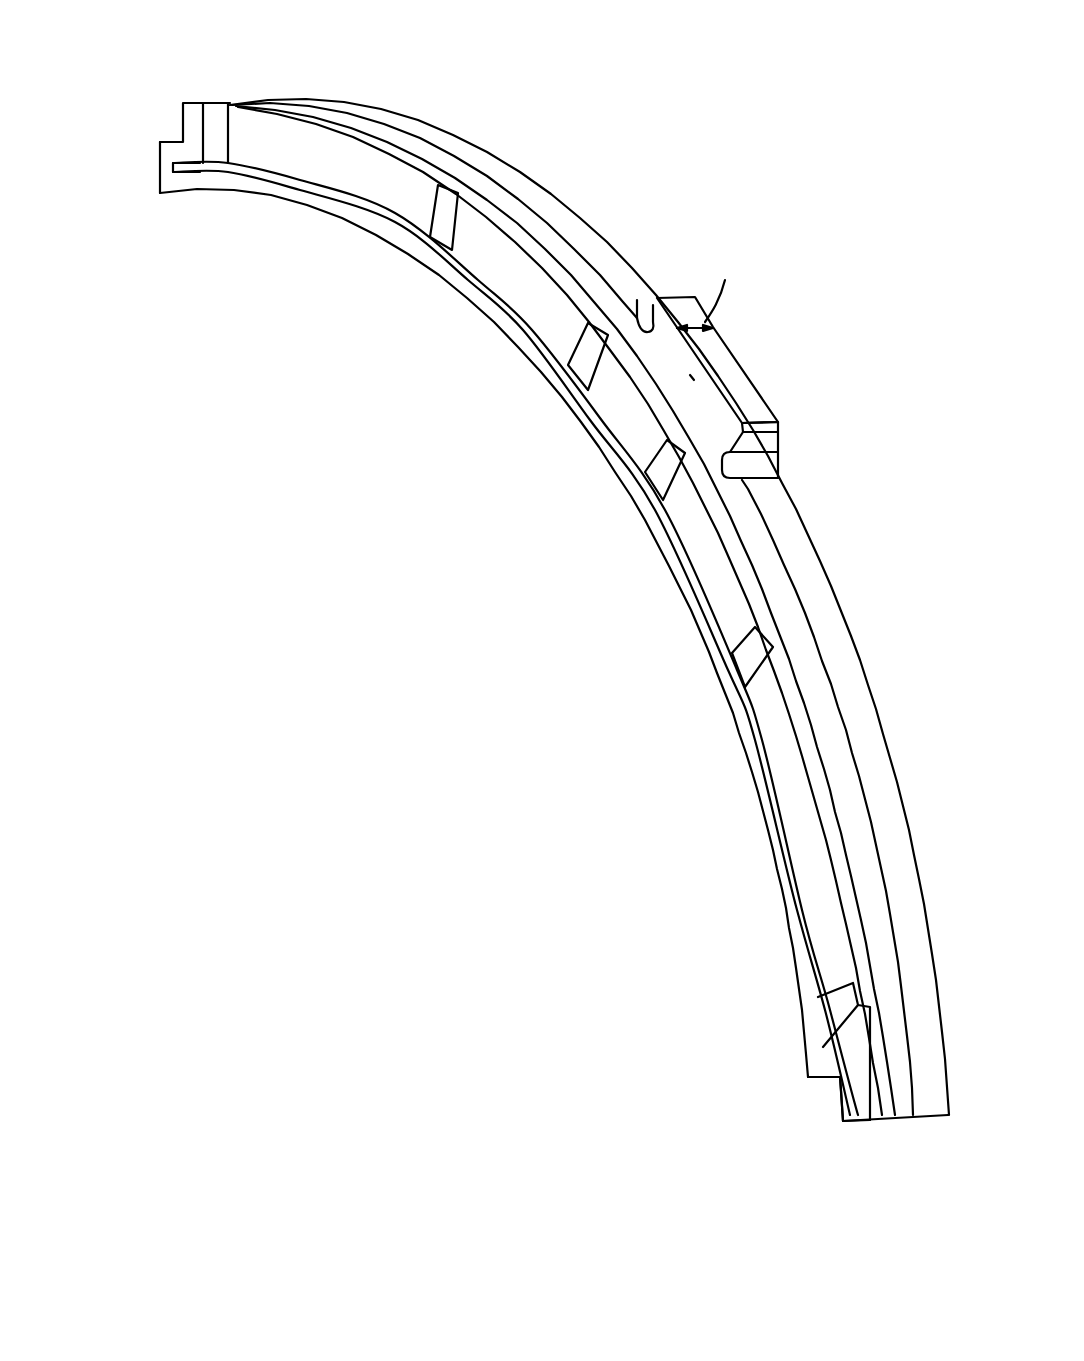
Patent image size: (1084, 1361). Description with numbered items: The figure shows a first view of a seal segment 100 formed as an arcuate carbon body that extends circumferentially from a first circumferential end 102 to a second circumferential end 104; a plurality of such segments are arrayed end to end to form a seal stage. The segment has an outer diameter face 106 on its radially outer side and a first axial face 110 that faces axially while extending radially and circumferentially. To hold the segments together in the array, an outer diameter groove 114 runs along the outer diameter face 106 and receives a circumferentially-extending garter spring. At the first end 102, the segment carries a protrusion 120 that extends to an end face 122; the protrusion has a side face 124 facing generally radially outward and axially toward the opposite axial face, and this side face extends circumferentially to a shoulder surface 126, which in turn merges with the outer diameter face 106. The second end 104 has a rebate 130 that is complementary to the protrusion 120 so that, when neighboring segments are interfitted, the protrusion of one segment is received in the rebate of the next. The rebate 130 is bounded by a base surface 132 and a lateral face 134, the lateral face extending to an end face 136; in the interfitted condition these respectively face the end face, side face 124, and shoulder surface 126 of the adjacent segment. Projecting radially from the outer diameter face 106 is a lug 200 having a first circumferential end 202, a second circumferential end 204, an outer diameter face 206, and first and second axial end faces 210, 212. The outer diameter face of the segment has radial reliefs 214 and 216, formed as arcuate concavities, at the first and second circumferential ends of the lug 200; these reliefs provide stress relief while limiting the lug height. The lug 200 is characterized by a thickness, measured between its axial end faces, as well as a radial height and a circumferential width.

The seal segment 100 is at (826, 177).
The first circumferential end 102 is at (136, 138).
The second circumferential end 104 is at (897, 1140).
The outer diameter face 106 is at (812, 586).
The first axial face 110 is at (800, 825).
The outer diameter groove 114 is at (822, 690).
The protrusion 120 is at (182, 215).
The end face 122 is at (157, 175).
The side face 124 is at (168, 138).
The shoulder surface 126 is at (183, 122).
The rebate 130 is at (811, 1104).
The base surface 132 is at (805, 1092).
The lateral face 134 is at (840, 1110).
The end face 136 is at (908, 1128).
The lug 200 is at (766, 342).
The first circumferential end of lug 202 is at (632, 294).
The second circumferential end of lug 204 is at (755, 436).
The outer diameter face of lug 206 is at (735, 374).
The first axial end face of lug 210 is at (690, 375).
The second axial end face of lug 212 is at (775, 400).
The radial relief 214 is at (616, 318).
The radial relief 216 is at (752, 459).